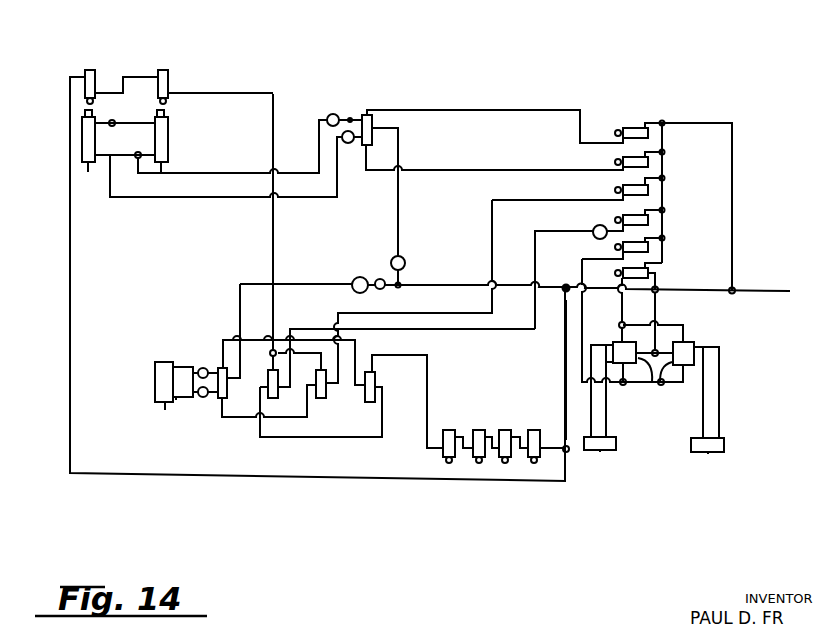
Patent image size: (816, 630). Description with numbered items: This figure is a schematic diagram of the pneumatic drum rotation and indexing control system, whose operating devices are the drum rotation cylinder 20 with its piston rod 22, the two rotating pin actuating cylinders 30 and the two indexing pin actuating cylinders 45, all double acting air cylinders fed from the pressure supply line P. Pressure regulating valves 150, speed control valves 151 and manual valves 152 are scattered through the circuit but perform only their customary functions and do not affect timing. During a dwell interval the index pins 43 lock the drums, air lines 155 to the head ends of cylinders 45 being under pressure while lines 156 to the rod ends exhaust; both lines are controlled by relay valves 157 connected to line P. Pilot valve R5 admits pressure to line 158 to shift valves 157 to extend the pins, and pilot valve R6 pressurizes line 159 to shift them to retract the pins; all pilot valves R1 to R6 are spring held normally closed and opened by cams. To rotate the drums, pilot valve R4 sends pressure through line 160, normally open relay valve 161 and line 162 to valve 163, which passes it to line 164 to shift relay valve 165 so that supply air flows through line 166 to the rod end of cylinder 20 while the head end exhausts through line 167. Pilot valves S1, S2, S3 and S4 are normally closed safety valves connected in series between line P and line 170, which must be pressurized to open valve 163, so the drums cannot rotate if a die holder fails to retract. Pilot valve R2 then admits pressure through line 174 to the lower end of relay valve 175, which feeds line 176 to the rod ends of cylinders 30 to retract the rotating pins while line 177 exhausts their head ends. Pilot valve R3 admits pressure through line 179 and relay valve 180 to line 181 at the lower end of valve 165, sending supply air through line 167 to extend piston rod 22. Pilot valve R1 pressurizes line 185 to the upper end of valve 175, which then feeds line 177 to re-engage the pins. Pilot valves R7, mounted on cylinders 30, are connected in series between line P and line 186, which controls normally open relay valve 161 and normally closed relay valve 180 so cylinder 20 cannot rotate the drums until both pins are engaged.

The drum rotation cylinder 20 is at (155, 383).
The piston rod 22 is at (165, 410).
The drum rotating pin actuating cylinder 30 is at (186, 142).
The index pin 43 is at (616, 441).
The drum indexing pin actuating cylinder 45 is at (603, 450).
The pressure regulating valve 150 is at (405, 262).
The speed control valve 151 is at (350, 117).
The manual valve 152 is at (378, 278).
The air line 155 is at (589, 417).
The air line 156 is at (699, 418).
The relay valve 157 is at (653, 376).
The line 158 is at (566, 338).
The line 159 is at (622, 310).
The line 160 is at (440, 331).
The relay valve 161 is at (273, 399).
The line 162 is at (268, 440).
The relay valve 163 is at (373, 385).
The line 164 is at (355, 346).
The relay valve 165 is at (215, 400).
The line 166 is at (178, 400).
The line 167 is at (186, 366).
The line 170 is at (427, 375).
The line 174 is at (524, 168).
The relay valve 175 is at (372, 122).
The line 176 is at (244, 172).
The line 177 is at (168, 199).
The line 179 is at (490, 224).
The relay valve 180 is at (321, 399).
The line 181 is at (229, 417).
The line 185 is at (521, 110).
The line 186 is at (237, 93).
The pilot valve R1 is at (636, 128).
The pilot valve R2 is at (622, 159).
The pilot valve R3 is at (622, 187).
The pilot valve R4 is at (622, 217).
The pilot valve R5 is at (648, 250).
The pilot valve R6 is at (648, 278).
The pilot valve R7 is at (163, 69).
The pilot valve S1 is at (449, 429).
The pilot valve S2 is at (479, 429).
The pilot valve S3 is at (505, 429).
The pilot valve S4 is at (534, 429).
The pressure supply line P is at (400, 153).